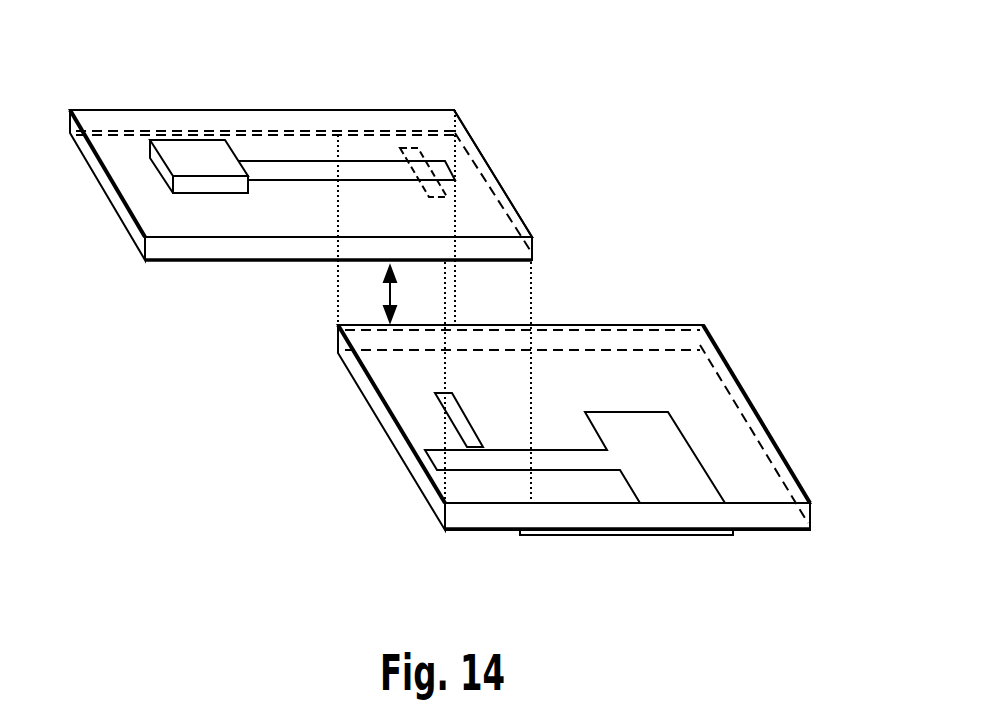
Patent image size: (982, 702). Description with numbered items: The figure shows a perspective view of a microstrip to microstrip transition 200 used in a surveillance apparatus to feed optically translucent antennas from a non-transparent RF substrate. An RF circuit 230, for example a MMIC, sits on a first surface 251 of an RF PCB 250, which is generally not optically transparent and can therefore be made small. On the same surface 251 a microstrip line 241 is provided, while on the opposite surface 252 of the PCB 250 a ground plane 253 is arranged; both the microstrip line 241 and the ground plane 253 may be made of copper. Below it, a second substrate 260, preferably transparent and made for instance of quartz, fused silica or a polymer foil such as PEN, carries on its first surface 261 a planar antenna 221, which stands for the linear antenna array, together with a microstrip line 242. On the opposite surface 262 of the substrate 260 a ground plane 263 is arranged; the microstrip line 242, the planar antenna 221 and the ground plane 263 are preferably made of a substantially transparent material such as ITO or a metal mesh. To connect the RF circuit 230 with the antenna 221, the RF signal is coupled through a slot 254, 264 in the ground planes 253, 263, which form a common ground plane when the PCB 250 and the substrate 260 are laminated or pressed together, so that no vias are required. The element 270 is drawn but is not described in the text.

The microstrip to microstrip transition 200 is at (672, 126).
The planar antenna 221 is at (685, 432).
The RF circuit 230 is at (198, 140).
The microstrip line 241 is at (305, 161).
The microstrip line 242 is at (562, 448).
The RF PCB 250 is at (157, 207).
The first surface 251 is at (126, 150).
The opposite surface 252 is at (169, 276).
The ground plane 253 is at (232, 263).
The slot 254 is at (403, 148).
The substrate 260 is at (393, 432).
The first surface 261 is at (460, 545).
The opposite surface 262 is at (508, 525).
The ground plane 263 is at (672, 325).
The slot 264 is at (465, 415).
The carrier 270 is at (640, 535).